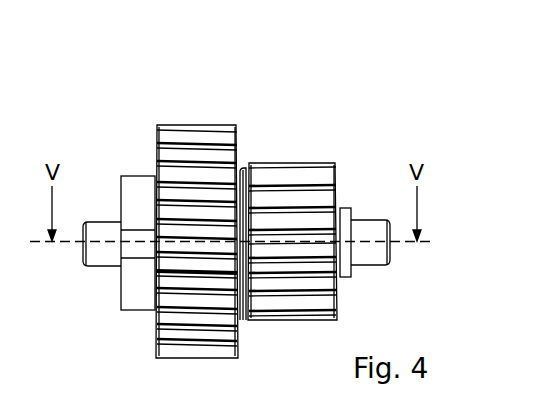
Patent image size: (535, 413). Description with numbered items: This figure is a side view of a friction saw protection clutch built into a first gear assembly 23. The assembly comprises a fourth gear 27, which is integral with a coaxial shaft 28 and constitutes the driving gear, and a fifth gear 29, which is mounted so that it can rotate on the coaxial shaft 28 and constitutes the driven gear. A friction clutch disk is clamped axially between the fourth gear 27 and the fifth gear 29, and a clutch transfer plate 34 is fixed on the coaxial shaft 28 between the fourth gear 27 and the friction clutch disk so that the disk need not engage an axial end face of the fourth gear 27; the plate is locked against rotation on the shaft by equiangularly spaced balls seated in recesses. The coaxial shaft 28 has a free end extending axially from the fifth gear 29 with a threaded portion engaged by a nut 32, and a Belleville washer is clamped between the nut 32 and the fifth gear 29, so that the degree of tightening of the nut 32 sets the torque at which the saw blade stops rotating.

The first gear assembly 23 is at (257, 100).
The fourth gear 27 is at (331, 173).
The coaxial shaft 28 is at (99, 256).
The fifth gear 29 is at (201, 151).
The nut 32 is at (138, 290).
The clutch transfer plate 34 is at (243, 316).